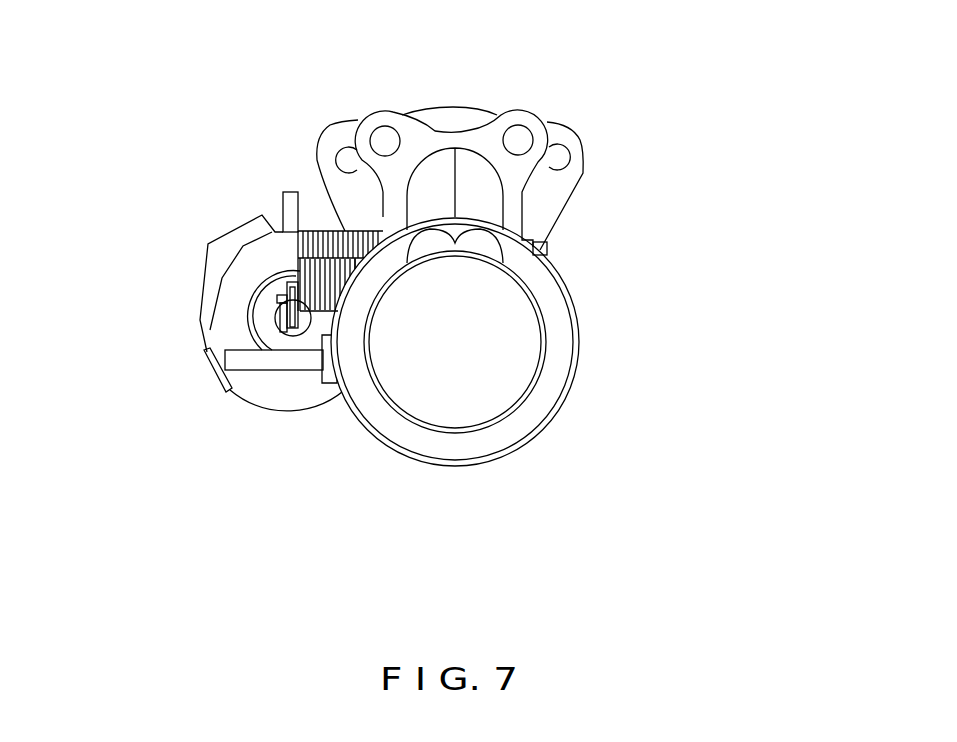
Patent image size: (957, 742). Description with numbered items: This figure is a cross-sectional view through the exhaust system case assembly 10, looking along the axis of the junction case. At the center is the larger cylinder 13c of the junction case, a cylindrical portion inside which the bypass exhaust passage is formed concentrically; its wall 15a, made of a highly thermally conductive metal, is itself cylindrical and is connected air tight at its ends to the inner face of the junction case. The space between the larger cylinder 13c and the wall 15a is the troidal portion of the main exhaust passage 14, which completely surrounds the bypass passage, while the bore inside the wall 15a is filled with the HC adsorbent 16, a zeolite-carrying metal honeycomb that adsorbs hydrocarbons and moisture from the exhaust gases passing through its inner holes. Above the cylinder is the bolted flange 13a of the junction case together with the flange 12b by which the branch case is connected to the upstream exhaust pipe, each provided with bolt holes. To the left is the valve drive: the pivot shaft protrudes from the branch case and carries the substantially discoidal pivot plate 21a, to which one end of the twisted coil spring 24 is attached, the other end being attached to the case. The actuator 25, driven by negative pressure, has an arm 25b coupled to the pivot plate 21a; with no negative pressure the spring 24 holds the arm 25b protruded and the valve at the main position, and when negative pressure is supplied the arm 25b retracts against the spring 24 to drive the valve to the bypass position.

The throttle device 10 is at (339, 527).
The flange 12b is at (580, 131).
The flange 13a is at (522, 108).
The larger cylinder 13c is at (527, 442).
The main exhaust passage 14 is at (553, 352).
The wall 15a is at (453, 433).
The HC adsorbent 16 is at (510, 328).
The pivot plate 21a is at (298, 236).
The twisted coil spring 24 is at (302, 231).
The actuator 25 is at (207, 353).
The arm 25b is at (290, 287).